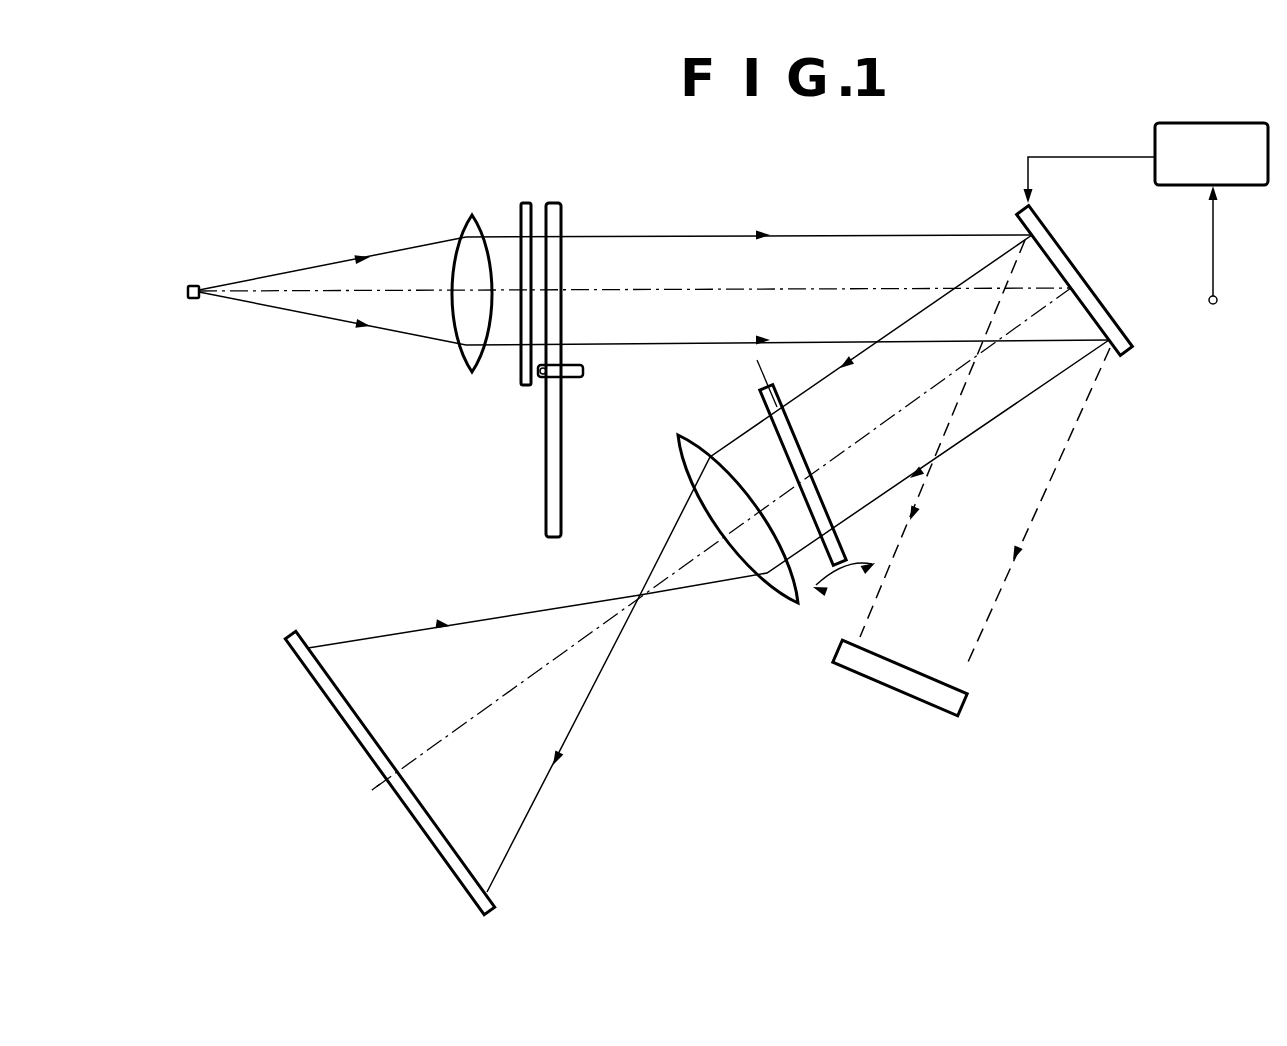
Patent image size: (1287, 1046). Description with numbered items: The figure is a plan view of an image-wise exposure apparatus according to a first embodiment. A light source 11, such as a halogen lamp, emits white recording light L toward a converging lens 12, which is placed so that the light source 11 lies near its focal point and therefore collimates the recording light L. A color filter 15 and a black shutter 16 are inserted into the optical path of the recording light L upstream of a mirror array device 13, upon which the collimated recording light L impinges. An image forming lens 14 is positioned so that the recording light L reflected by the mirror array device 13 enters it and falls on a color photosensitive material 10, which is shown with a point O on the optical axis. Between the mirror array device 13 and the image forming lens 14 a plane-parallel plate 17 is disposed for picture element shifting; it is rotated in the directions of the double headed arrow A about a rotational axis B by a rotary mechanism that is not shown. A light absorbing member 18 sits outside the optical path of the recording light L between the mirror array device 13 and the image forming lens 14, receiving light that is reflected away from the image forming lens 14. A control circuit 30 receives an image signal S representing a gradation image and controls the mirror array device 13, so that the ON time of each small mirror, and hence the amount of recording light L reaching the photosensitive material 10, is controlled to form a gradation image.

The color photosensitive material 10 is at (445, 862).
The light source 11 is at (190, 284).
The converging lens 12 is at (467, 216).
The mirror array device 13 is at (1074, 262).
The image forming lens 14 is at (779, 596).
The color filter 15 is at (553, 206).
The black shutter 16 is at (521, 206).
The plane-parallel plate 17 is at (824, 497).
The light absorbing member 18 is at (966, 700).
The control circuit 30 is at (1222, 168).
The recording light L is at (324, 262).
The image signal S is at (1213, 262).
The double headed arrow A is at (843, 596).
The rotational axis B is at (766, 383).
The optical axis point on object O is at (364, 800).